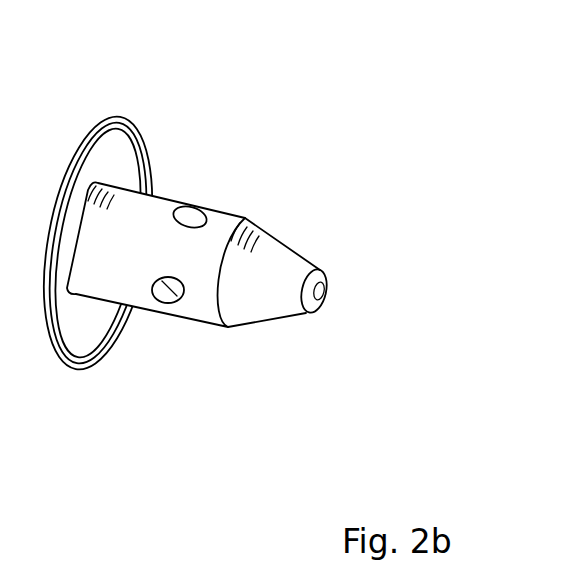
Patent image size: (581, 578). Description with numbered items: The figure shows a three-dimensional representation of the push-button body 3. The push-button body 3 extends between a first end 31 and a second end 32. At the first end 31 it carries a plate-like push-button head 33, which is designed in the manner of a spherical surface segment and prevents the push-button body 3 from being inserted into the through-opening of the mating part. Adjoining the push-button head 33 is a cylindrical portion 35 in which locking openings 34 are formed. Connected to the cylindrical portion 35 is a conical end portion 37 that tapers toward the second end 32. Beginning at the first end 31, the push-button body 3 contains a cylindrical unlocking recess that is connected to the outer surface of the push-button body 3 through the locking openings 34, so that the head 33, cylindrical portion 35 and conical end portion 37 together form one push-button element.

The push-button body 3 is at (218, 162).
The first end 31 is at (49, 228).
The second end 32 is at (322, 302).
The push-button head 33 is at (85, 320).
The locking openings 34 is at (175, 296).
The cylindrical portion 35 is at (152, 233).
The conical end portion 37 is at (255, 297).